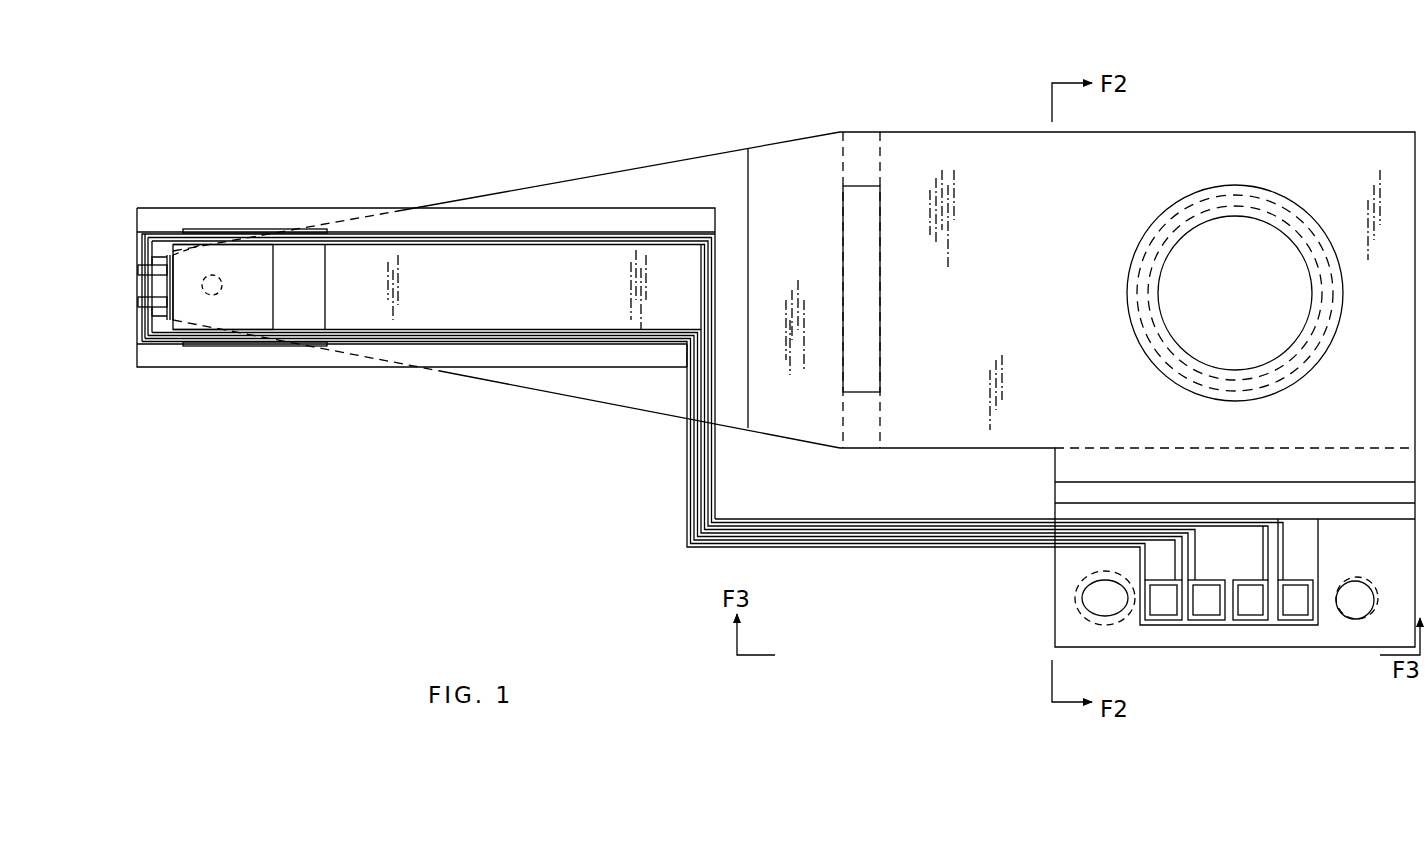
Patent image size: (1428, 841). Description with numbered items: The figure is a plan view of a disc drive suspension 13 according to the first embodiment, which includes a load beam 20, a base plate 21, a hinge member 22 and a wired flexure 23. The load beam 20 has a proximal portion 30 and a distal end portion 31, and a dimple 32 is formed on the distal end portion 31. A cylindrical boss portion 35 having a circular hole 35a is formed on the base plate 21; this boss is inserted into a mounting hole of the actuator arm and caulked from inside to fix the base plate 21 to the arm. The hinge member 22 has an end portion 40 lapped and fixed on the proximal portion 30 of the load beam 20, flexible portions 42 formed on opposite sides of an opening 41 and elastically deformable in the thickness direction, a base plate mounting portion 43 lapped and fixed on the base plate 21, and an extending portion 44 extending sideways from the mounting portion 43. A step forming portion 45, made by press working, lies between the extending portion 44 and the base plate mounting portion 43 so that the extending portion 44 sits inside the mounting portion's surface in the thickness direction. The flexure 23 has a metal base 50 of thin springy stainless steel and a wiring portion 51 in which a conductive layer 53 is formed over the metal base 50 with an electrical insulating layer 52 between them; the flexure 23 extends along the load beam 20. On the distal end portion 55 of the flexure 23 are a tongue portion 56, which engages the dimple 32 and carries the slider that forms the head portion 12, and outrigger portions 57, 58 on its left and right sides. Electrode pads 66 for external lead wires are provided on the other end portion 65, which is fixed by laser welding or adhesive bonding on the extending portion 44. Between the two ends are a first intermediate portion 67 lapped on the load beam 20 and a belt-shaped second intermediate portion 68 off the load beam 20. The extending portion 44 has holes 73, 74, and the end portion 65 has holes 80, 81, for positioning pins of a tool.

The head portion 12 is at (201, 370).
The suspension 13 is at (624, 96).
The load beam 20 is at (570, 183).
The base plate 21 is at (1200, 132).
The hinge member 22 is at (942, 130).
The wired flexure 23 is at (843, 550).
The proximal portion 30 is at (790, 145).
The distal end portion 31 is at (197, 258).
The dimple 32 is at (222, 285).
The boss portion 35 is at (1128, 268).
The circular hole 35a is at (1275, 352).
The end portion 40 is at (790, 432).
The opening 41 is at (852, 248).
The flexible portions 42 is at (862, 140).
The base plate mounting portion 43 is at (1292, 140).
The extending portion 44 is at (1055, 605).
The step forming portion 45 is at (1055, 488).
The metal base 50 is at (580, 352).
The wiring portion 51 is at (478, 234).
The electrical insulating layer 52 is at (1312, 537).
The conductive layer 53 is at (1278, 565).
The distal end portion 55 is at (138, 270).
The tongue portion 56 is at (275, 302).
The outrigger portion 57 is at (258, 220).
The outrigger portion 58 is at (250, 348).
The other end portion 65 is at (1275, 638).
The electrode pads 66 is at (1245, 615).
The first intermediate portion 67 is at (512, 370).
The second intermediate portion 68 is at (923, 520).
The hole 73 is at (1368, 608).
The hole 74 is at (1125, 615).
The hole 80 is at (1345, 616).
The hole 81 is at (1100, 608).